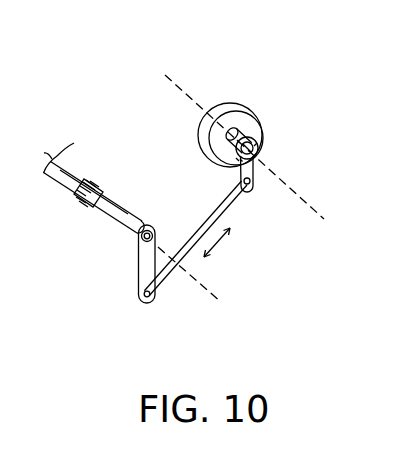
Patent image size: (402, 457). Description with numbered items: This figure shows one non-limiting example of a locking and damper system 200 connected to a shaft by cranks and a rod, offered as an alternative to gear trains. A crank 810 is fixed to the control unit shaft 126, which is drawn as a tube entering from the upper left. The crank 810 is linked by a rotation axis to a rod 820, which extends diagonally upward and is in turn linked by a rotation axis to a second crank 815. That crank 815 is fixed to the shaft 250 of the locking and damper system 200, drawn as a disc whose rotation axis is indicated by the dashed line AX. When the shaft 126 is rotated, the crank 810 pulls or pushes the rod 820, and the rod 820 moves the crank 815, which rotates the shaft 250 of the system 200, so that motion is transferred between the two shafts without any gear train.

The control unit shaft 126 is at (103, 212).
The locking and damper system 200 is at (238, 105).
The shaft 250 is at (248, 128).
The crank 810 is at (140, 263).
The crank 815 is at (256, 162).
The rod 820 is at (236, 205).
The axis AX is at (254, 180).